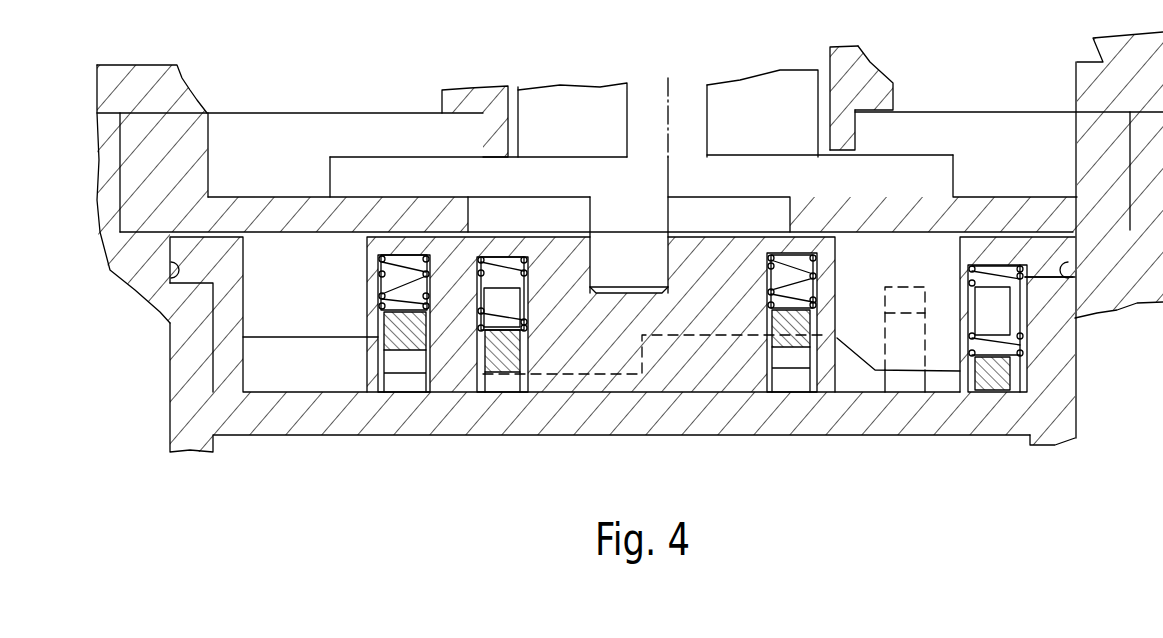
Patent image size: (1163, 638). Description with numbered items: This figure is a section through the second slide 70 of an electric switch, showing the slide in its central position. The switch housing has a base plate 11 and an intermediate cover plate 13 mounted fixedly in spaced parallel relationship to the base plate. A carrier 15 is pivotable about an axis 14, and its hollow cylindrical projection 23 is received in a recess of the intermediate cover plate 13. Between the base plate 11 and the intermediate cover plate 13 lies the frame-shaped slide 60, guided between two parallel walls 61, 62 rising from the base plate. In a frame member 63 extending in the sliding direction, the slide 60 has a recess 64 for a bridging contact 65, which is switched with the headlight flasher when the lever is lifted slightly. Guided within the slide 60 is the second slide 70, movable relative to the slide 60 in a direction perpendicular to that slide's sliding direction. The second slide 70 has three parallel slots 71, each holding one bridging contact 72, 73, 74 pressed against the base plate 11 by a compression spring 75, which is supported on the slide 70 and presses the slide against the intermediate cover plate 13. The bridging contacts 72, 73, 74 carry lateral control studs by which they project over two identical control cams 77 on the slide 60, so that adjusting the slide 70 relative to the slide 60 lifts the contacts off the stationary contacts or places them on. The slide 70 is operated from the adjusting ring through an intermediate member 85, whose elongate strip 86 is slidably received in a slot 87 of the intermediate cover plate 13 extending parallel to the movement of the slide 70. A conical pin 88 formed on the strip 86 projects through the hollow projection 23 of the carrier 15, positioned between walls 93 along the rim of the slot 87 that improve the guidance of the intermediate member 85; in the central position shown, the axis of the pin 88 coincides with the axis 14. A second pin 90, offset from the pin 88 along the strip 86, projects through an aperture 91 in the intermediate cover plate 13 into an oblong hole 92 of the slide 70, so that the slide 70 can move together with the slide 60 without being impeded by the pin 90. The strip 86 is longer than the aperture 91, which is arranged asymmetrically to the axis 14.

The base plate 11 is at (1050, 413).
The intermediate cover plate 13 is at (1093, 148).
The axis 14 is at (672, 113).
The carrier 15 is at (880, 98).
The hollow cylindrical projection 23 is at (848, 137).
The slide 60 is at (248, 318).
The wall 61 is at (1066, 270).
The wall 62 is at (145, 314).
The frame member 63 is at (972, 248).
The recess 64 is at (962, 290).
The bridging contact 65 is at (1000, 378).
The second slide 70 is at (557, 238).
The slot 71 is at (378, 278).
The bridging contact 72 is at (405, 325).
The bridging contact 73 is at (505, 348).
The bridging contact 74 is at (792, 330).
The compression spring 75 is at (477, 313).
The control cam 77 is at (857, 342).
The intermediate member 85 is at (713, 107).
The elongate strip 86 is at (735, 172).
The slot 87 is at (1020, 127).
The conical pin 88 is at (642, 113).
The pin 90 is at (637, 265).
The aperture 91 is at (755, 212).
The oblong hole 92 is at (665, 293).
The wall 93 is at (802, 90).